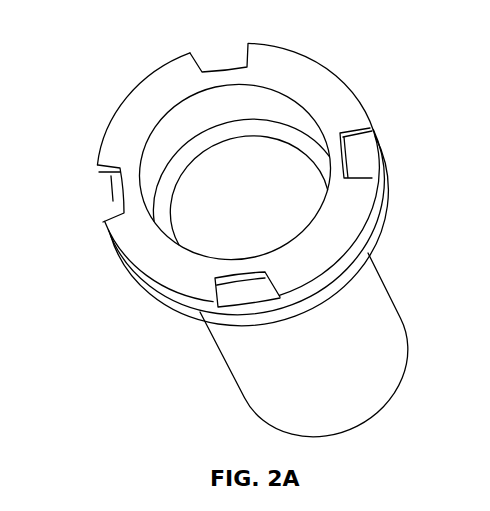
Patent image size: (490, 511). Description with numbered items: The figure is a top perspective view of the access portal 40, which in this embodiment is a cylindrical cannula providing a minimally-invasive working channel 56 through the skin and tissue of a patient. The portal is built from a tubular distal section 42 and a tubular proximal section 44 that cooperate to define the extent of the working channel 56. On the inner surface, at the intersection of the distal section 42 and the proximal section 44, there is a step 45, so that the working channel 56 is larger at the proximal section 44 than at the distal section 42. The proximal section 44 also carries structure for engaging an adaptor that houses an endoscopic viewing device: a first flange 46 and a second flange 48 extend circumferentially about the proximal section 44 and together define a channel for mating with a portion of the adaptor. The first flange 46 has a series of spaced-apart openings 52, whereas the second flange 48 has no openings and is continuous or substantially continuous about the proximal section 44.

The access portal 40 is at (137, 37).
The distal section 42 is at (394, 362).
The proximal section 44 is at (374, 179).
The step 45 is at (170, 185).
The first flange 46 is at (313, 84).
The second flange 48 is at (372, 203).
The spaced-apart openings 52 is at (232, 64).
The working channel 56 is at (261, 158).